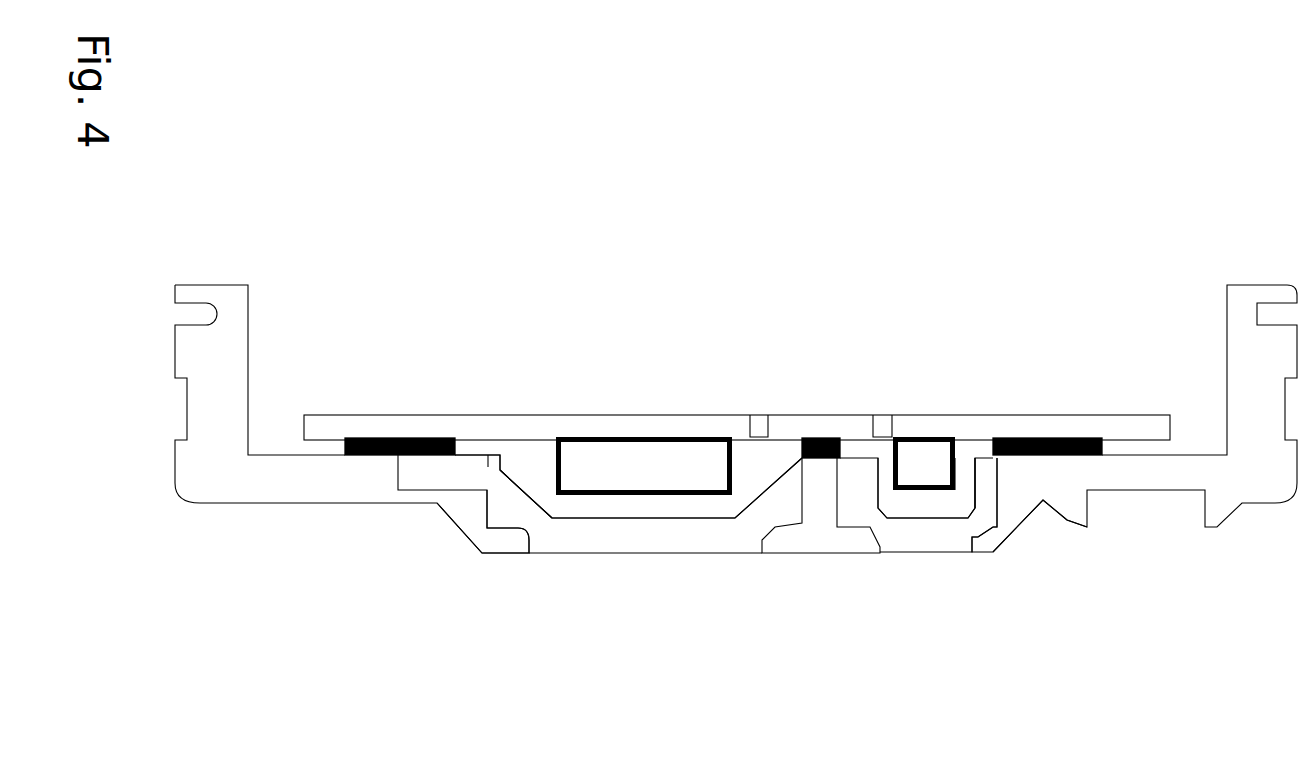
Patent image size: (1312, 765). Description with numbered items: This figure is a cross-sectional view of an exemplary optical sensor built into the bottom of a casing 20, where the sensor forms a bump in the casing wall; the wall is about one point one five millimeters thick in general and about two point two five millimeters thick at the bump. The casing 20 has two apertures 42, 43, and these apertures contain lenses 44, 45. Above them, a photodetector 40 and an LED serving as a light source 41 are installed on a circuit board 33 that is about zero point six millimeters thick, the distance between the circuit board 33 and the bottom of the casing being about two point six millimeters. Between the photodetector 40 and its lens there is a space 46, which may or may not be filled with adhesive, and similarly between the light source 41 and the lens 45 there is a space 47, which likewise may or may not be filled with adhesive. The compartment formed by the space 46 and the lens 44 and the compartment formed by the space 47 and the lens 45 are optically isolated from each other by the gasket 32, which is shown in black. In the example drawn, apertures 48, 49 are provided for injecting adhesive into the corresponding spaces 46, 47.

The casing 20 is at (277, 482).
The gasket 32 is at (385, 457).
The circuit board 33 is at (422, 425).
The photodetector 40 is at (640, 465).
The light source 41 is at (918, 458).
The aperture 42 is at (651, 514).
The aperture 43 is at (926, 515).
The lens 44 is at (568, 537).
The lens 45 is at (908, 537).
The space 46 is at (525, 453).
The space 47 is at (958, 467).
The aperture 48 is at (755, 427).
The aperture 49 is at (882, 427).